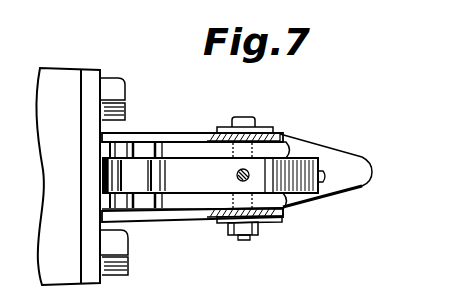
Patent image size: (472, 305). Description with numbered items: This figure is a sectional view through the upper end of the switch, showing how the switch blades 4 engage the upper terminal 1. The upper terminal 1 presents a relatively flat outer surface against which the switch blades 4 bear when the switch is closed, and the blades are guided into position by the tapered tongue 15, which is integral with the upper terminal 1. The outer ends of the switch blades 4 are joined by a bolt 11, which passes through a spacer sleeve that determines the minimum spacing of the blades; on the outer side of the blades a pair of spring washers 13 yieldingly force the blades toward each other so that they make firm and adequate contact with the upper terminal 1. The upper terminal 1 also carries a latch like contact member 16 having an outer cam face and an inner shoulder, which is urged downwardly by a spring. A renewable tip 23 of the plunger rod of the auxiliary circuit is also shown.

The upper terminal 1 is at (90, 68).
The switch blades 4 is at (283, 134).
The bolt 11 is at (247, 240).
The spring washers 13 is at (220, 223).
The tapered tongue 15 is at (377, 168).
The latch like contact member 16 is at (326, 176).
The renewable tip 23 is at (237, 175).